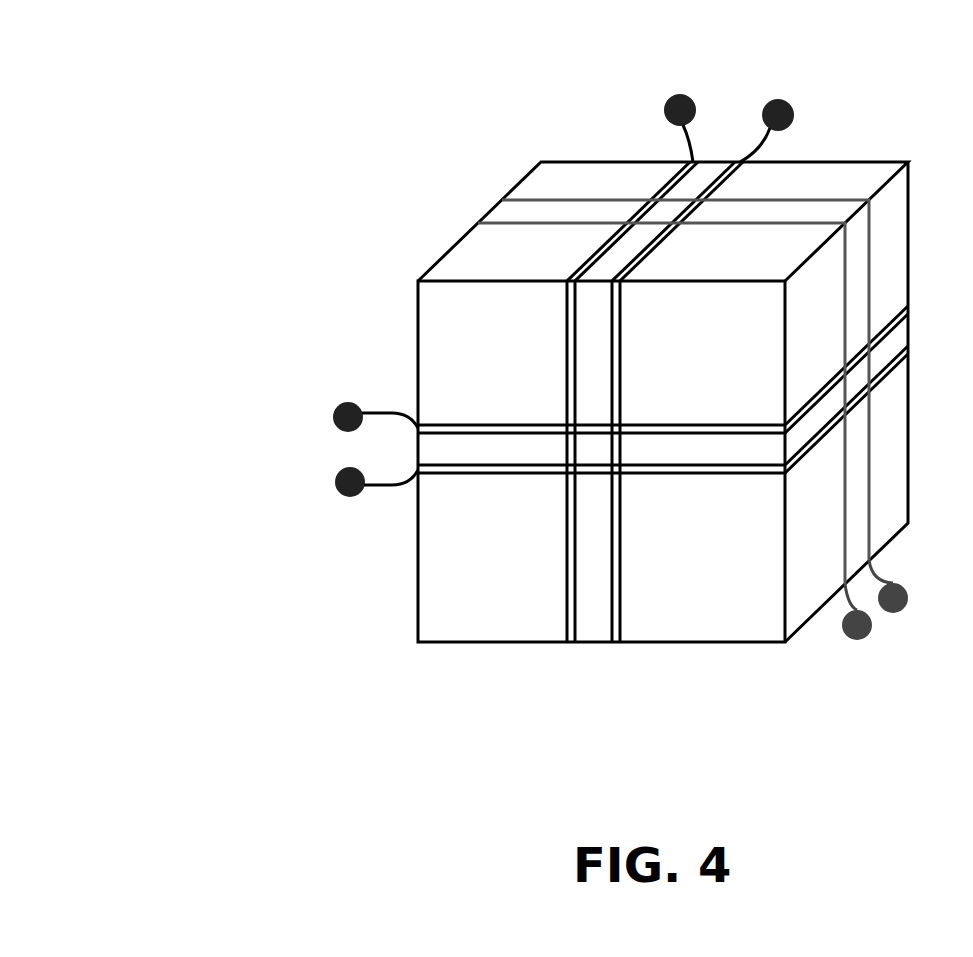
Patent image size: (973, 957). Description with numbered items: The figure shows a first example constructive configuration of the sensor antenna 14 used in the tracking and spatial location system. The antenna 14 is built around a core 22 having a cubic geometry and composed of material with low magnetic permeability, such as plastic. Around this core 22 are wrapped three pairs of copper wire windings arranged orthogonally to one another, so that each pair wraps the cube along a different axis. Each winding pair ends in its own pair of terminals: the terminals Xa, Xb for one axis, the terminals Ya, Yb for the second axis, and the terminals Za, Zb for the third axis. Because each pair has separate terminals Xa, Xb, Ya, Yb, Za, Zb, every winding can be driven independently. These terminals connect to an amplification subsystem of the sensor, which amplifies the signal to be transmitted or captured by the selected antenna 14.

The antenna 14 is at (258, 136).
The core 22 is at (687, 578).
The terminal Xa is at (598, 369).
The terminal Xb is at (598, 421).
The terminal Ya is at (632, 349).
The terminal Yb is at (703, 349).
The terminal Za is at (724, 406).
The terminal Zb is at (693, 442).